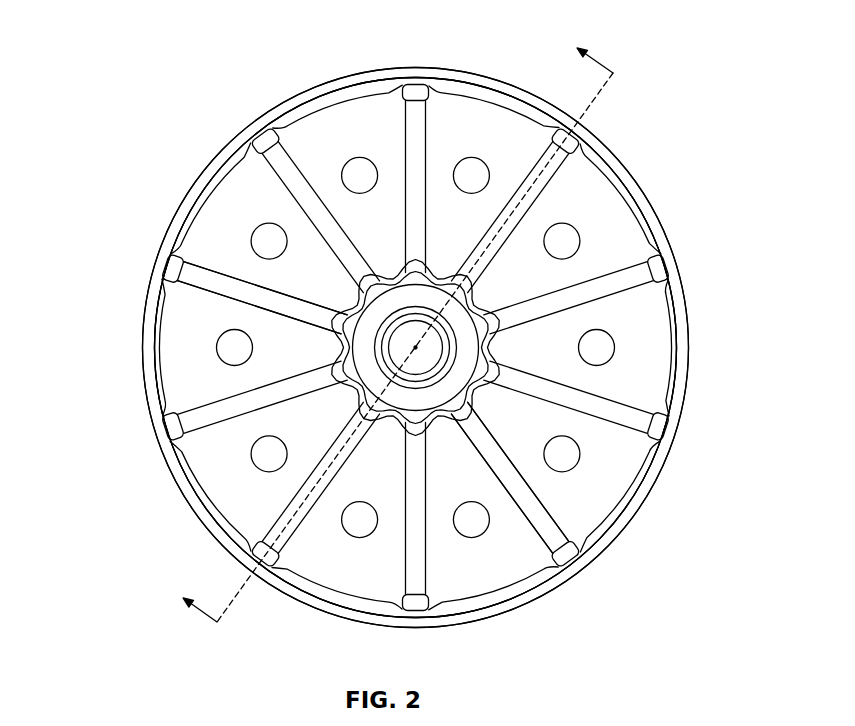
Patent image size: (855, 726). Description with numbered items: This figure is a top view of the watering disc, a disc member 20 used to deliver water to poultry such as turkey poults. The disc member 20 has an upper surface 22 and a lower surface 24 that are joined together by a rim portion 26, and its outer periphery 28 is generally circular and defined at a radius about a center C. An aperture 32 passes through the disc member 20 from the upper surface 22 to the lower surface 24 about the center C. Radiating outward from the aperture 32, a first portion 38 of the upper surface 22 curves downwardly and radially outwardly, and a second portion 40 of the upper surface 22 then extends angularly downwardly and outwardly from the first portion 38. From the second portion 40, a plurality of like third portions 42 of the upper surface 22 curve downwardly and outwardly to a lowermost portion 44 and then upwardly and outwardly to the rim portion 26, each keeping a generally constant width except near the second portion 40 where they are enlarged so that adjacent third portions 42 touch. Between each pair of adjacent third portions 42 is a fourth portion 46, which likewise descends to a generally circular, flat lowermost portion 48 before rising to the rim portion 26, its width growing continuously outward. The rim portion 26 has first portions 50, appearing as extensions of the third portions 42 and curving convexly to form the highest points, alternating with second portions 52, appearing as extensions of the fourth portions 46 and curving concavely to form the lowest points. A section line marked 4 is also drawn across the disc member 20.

The disc member 20 is at (124, 40).
The upper surface 22 is at (614, 477).
The lower surface 24 is at (165, 261).
The rim portion 26 is at (640, 197).
The outer periphery 28 is at (690, 368).
The aperture 32 is at (420, 366).
The first portion of the upper surface 38 is at (428, 394).
The second portion of the upper surface 40 is at (437, 285).
The third portions of the upper surface 42 is at (297, 170).
The lowermost portion of the third portions 44 is at (290, 300).
The fourth portions of the upper surface 46 is at (384, 108).
The lowermost portion of the fourth portions 48 is at (480, 162).
The first portions of the rim portion 50 is at (425, 88).
The second portions of the rim portion 52 is at (223, 163).
The section line 4- 4 is at (384, 326).
The center C is at (418, 346).